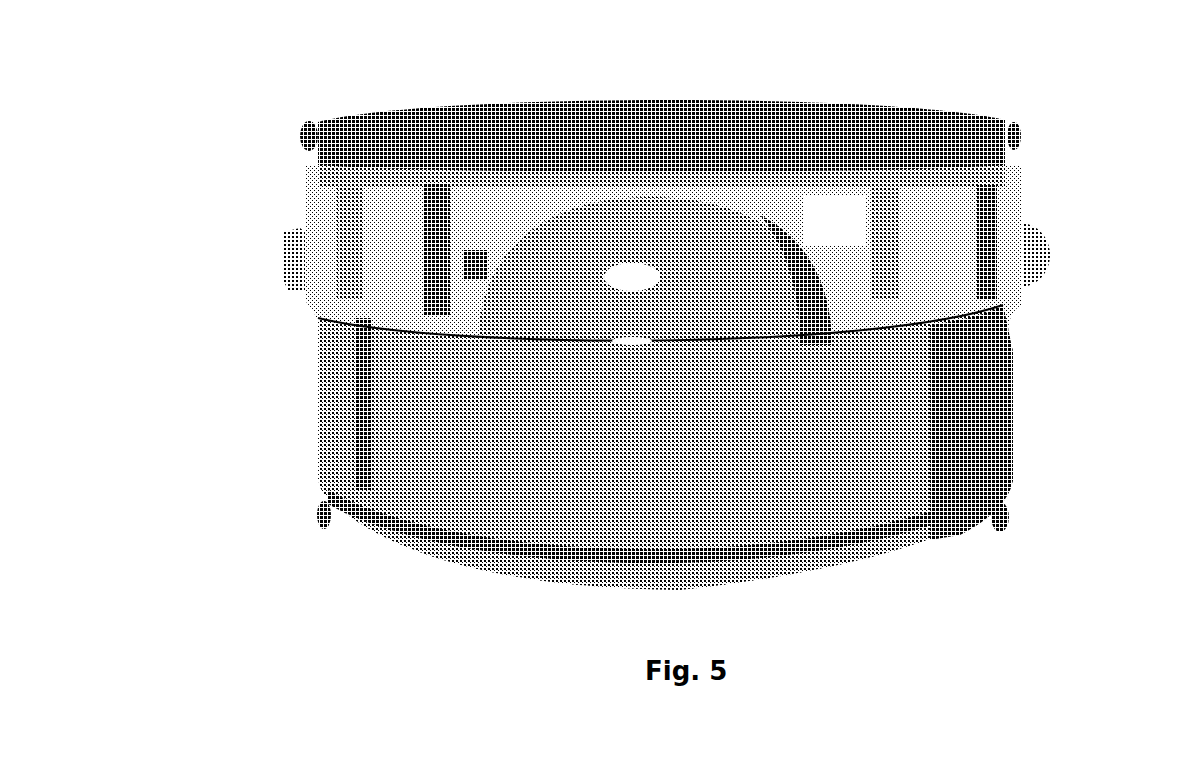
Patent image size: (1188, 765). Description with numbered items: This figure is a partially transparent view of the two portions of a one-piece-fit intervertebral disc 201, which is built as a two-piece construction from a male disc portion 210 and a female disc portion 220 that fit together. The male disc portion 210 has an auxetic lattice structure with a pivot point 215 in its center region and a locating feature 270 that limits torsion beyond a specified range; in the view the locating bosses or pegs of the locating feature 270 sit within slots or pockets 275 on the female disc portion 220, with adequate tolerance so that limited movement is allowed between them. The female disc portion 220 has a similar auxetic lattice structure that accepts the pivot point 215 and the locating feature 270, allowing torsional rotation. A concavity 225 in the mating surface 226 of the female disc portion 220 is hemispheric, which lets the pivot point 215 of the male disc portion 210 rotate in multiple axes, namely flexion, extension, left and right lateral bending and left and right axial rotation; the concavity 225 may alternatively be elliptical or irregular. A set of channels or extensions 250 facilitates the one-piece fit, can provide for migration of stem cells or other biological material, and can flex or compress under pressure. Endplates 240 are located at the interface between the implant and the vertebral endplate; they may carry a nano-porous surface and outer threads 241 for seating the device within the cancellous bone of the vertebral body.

The intervertebral disc 201 is at (103, 123).
The male disc portion 210 is at (1013, 448).
The pivot point 215 is at (817, 260).
The female disc portion 220 is at (1022, 204).
The concavity 225 is at (497, 222).
The mating surface 226 is at (383, 335).
The endplates 240 is at (832, 114).
The outer threads 241 is at (330, 145).
The extensions 250 is at (1005, 166).
The locating feature 270 is at (877, 327).
The slots or pockets 275 is at (427, 310).